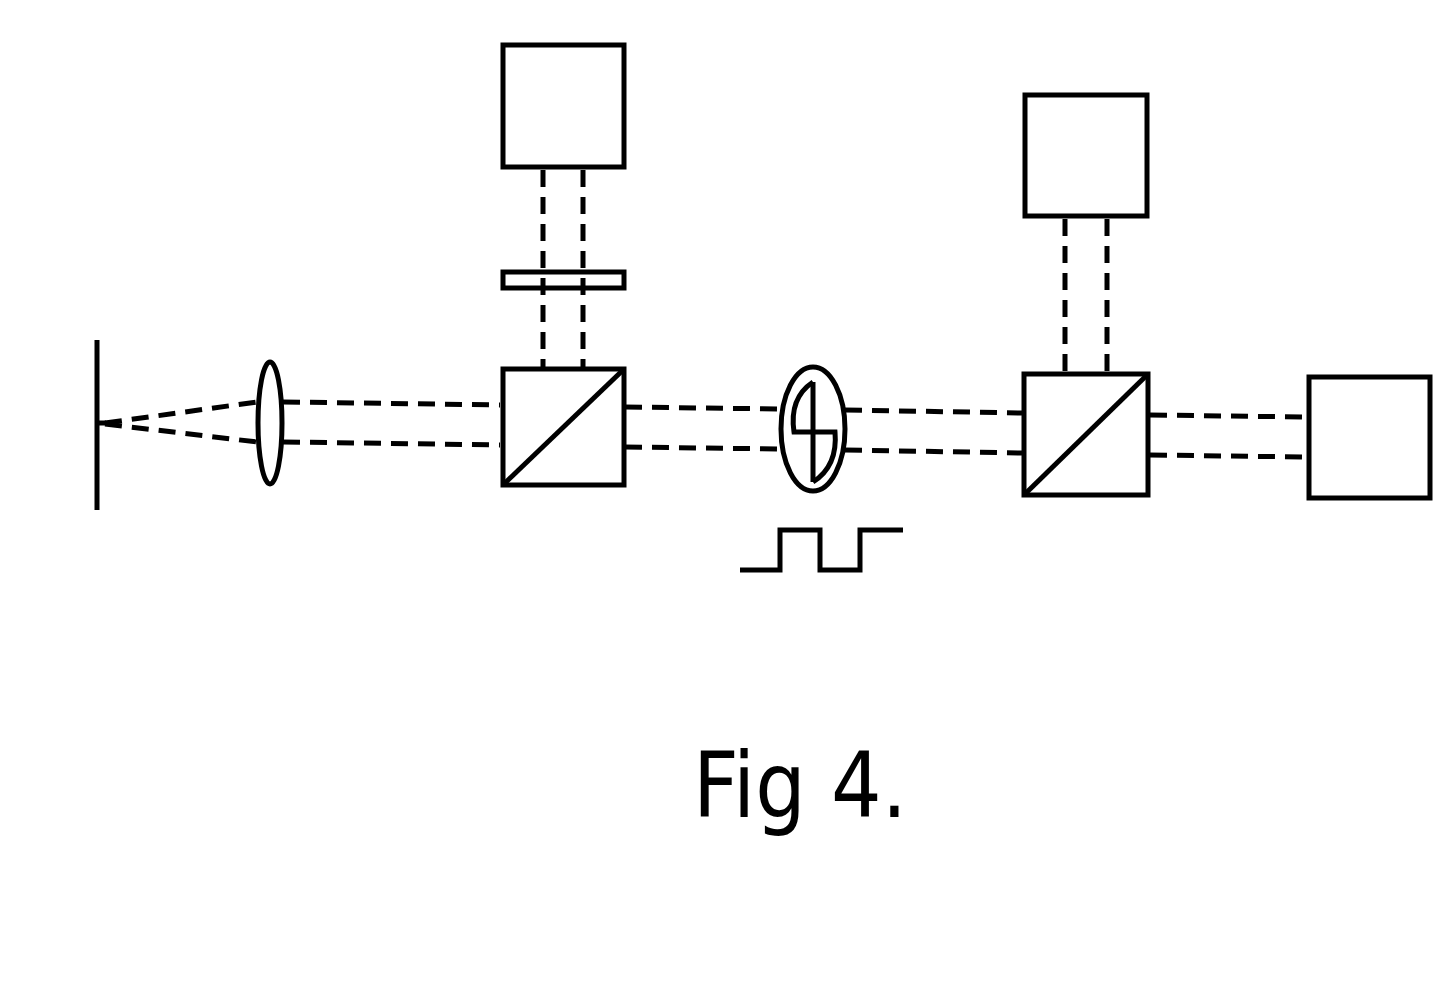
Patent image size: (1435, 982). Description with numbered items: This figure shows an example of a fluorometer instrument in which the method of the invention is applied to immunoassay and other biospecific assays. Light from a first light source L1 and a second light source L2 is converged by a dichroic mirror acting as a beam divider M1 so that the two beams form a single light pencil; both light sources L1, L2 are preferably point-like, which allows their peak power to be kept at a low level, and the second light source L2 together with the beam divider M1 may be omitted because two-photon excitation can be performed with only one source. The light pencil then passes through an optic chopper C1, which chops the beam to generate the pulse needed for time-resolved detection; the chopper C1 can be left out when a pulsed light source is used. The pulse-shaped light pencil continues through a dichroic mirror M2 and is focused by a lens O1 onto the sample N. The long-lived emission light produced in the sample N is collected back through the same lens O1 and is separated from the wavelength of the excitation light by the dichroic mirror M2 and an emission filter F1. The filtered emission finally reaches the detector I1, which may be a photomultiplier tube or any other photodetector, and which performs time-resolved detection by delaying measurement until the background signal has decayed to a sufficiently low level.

The sample N is at (96, 458).
The lens O1 is at (271, 469).
The detector I1 is at (563, 106).
The emission filter F1 is at (522, 279).
The dichroic mirror M2 is at (563, 475).
The optic chopper C1 is at (813, 396).
The light source L2 is at (1086, 155).
The dichroic mirror (beam divider) M1 is at (1086, 480).
The light source L1 is at (1369, 437).